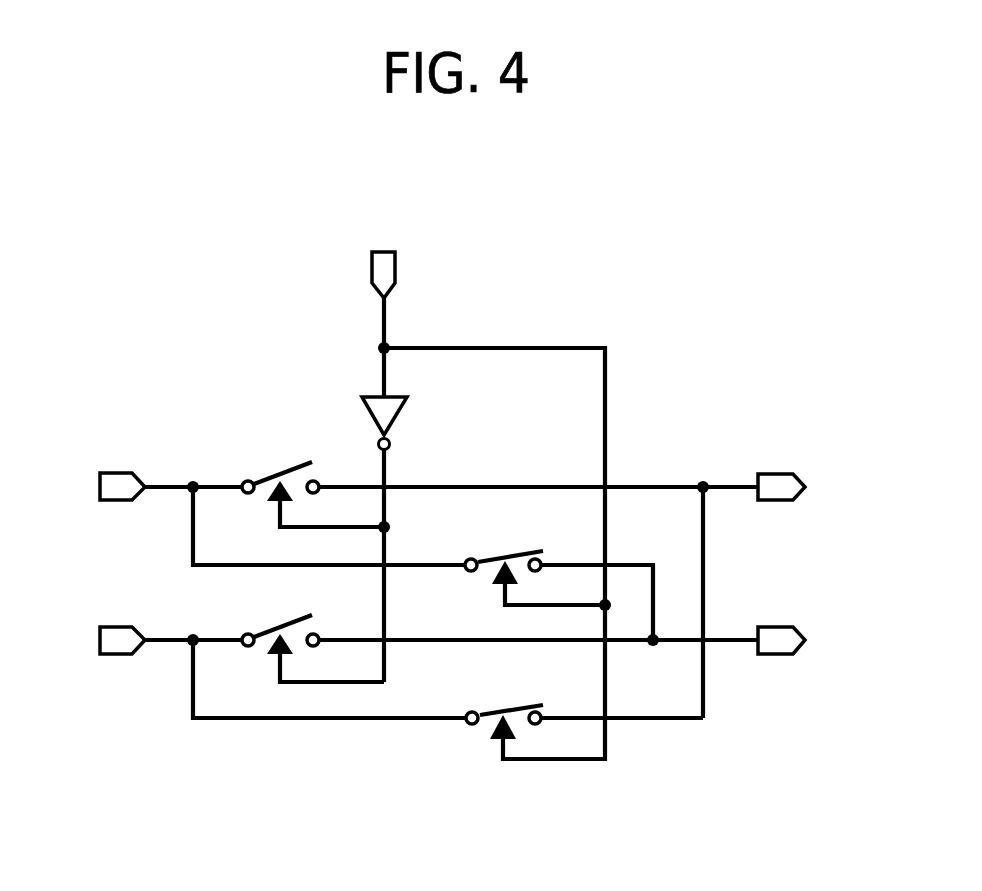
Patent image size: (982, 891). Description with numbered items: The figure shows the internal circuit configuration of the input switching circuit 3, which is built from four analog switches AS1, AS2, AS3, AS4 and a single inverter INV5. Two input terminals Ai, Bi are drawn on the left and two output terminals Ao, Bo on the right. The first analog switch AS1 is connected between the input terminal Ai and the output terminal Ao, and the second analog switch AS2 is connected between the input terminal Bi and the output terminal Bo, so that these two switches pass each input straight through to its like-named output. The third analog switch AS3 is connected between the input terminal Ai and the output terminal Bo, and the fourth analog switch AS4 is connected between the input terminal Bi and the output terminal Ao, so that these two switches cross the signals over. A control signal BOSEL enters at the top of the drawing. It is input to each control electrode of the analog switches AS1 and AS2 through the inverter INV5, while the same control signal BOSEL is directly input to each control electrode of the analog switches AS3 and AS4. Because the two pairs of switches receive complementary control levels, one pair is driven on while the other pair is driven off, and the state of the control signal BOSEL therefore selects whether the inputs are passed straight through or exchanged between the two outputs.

The input switching circuit 3 is at (605, 304).
The control signal BOSEL is at (383, 255).
The inverter INV5 is at (417, 423).
The first analog switch AS1 is at (308, 481).
The second analog switch AS2 is at (308, 635).
The third analog switch AS3 is at (559, 579).
The fourth analog switch AS4 is at (584, 705).
The input terminal Ai is at (101, 488).
The input terminal Bi is at (101, 638).
The output terminal Ao is at (805, 488).
The output terminal Bo is at (805, 641).